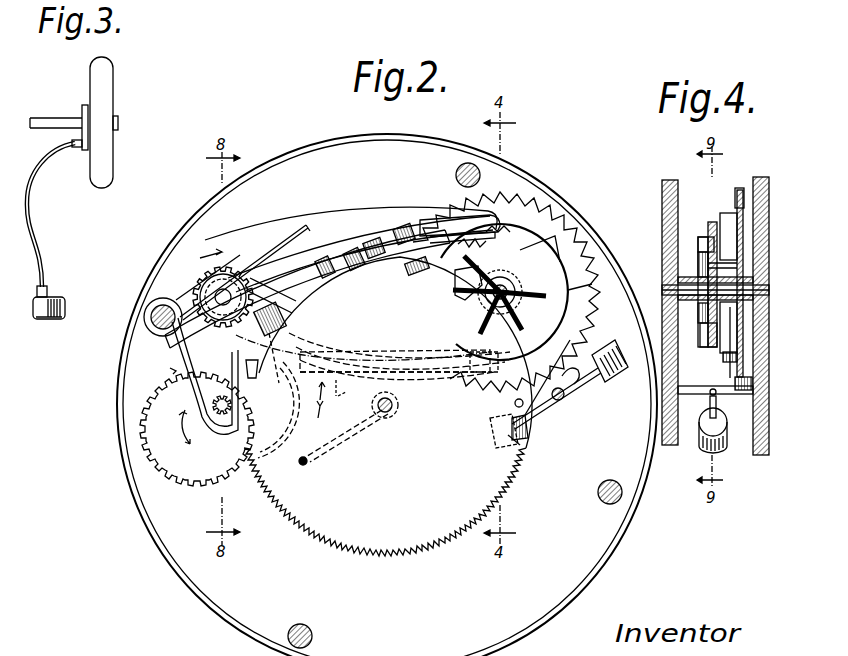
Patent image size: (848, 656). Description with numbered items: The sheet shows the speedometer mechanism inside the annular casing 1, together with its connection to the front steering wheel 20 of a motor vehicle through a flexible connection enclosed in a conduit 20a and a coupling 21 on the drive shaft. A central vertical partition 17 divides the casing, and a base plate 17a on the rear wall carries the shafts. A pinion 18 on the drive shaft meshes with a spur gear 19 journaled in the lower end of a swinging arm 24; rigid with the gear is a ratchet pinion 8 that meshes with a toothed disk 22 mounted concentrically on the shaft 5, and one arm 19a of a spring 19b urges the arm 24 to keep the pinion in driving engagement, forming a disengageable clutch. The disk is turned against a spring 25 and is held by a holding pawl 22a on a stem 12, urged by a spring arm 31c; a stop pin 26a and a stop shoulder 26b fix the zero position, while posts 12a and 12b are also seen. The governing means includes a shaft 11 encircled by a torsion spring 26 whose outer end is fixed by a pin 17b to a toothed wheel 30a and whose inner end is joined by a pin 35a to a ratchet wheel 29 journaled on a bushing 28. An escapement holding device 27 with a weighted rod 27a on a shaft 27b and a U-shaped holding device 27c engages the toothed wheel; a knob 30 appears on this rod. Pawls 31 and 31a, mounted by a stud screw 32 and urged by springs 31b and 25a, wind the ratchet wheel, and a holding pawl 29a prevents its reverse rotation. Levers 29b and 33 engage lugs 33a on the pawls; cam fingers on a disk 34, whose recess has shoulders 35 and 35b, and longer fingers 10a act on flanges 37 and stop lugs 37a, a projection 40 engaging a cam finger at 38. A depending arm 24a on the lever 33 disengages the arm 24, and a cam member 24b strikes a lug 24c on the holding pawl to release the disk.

In FIG. 2, the casing 1 is at (230, 625).
In FIG. 2, the shaft 5 is at (390, 412).
In FIG. 2, the ratchet pinion 8 is at (213, 422).
In FIG. 4, the fingers 10a is at (702, 320).
In FIG. 2, the fingers 10a is at (604, 350).
In FIG. 4, the shaft 11 is at (700, 291).
In FIG. 2, the shaft 11 is at (504, 306).
In FIG. 2, the stem 12 is at (151, 319).
In FIG. 2, the post 12a is at (313, 636).
In FIG. 2, the post 12b is at (603, 502).
In FIG. 4, the central vertical partition 17 is at (672, 192).
In FIG. 4, the base plate 17a is at (760, 182).
In FIG. 4, the pin 17b is at (727, 428).
In FIG. 2, the pinion 18 is at (196, 286).
In FIG. 2, the spur gear 19 is at (157, 426).
In FIG. 2, the spring arm 19a is at (286, 301).
In FIG. 2, the spring 19b is at (235, 387).
In FIG. 3, the front steering wheel 20 is at (108, 91).
In FIG. 4, the front steering wheel 20 is at (735, 192).
In FIG. 3, the conduit 20a is at (50, 160).
In FIG. 3, the coupling 21 is at (46, 293).
In FIG. 2, the toothed disk 22 is at (304, 526).
In FIG. 2, the holding pawl 22a is at (197, 397).
In FIG. 2, the arm 24 is at (187, 327).
In FIG. 2, the depending arm 24a is at (278, 395).
In FIG. 2, the cam member 24b is at (192, 322).
In FIG. 2, the lug 24c is at (134, 335).
In FIG. 2, the spring 25 is at (348, 440).
In FIG. 2, the spring arm 25a is at (341, 399).
In FIG. 2, the coiled torsion spring 26 is at (584, 312).
In FIG. 2, the stop pin 26a is at (526, 424).
In FIG. 2, the stop shoulder 26b is at (512, 442).
In FIG. 2, the holding device 27 is at (570, 384).
In FIG. 2, the rod 27a is at (536, 410).
In FIG. 4, the shaft 27b is at (694, 400).
In FIG. 2, the shaft 27b is at (562, 400).
In FIG. 2, the U-shaped holding device 27c is at (486, 431).
In FIG. 4, the bushing 28 is at (700, 272).
In FIG. 4, the ratchet wheel 29 is at (722, 352).
In FIG. 2, the ratchet wheel 29 is at (560, 262).
In FIG. 2, the holding pawl 29a is at (340, 262).
In FIG. 2, the lever 29b is at (370, 245).
In FIG. 2, the knob 30 is at (588, 372).
In FIG. 4, the toothed wheel 30a is at (730, 212).
In FIG. 2, the toothed wheel 30a is at (590, 292).
In FIG. 2, the pawl 31 is at (406, 222).
In FIG. 2, the pawl 31a is at (395, 384).
In FIG. 2, the coiled spring 31b is at (270, 250).
In FIG. 2, the spring arm 31c is at (170, 370).
In FIG. 2, the stud screw 32 is at (226, 292).
In FIG. 2, the lever 33 is at (418, 372).
In FIG. 2, the lug 33a is at (450, 220).
In FIG. 4, the disk 34 is at (700, 298).
In FIG. 4, the shoulder 35 is at (700, 246).
In FIG. 2, the pin 35a is at (466, 283).
In FIG. 2, the shoulder 35b is at (578, 332).
In FIG. 4, the flanges 37 is at (706, 346).
In FIG. 2, the flanges 37 is at (522, 250).
In FIG. 4, the stop lugs 37a is at (712, 230).
In FIG. 2, the stop lugs 37a is at (455, 249).
In FIG. 2, the engagement point 38 is at (503, 223).
In FIG. 2, the laterally extending projection 40 is at (506, 292).